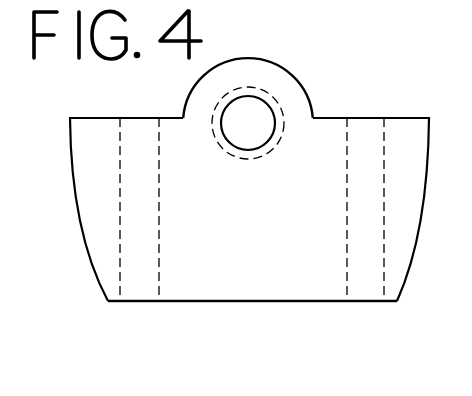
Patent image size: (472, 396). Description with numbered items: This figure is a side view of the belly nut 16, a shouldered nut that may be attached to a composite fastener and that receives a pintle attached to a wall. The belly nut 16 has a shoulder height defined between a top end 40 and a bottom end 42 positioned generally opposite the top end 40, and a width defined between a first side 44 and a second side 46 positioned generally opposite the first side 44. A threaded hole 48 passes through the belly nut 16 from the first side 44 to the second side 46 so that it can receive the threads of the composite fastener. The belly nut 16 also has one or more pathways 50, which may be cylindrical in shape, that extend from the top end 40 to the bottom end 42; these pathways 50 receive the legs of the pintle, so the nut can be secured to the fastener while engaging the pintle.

The belly nut 16 is at (171, 117).
The top end 40 is at (329, 117).
The bottom end 42 is at (313, 301).
The first side 44 is at (177, 278).
The second side 46 is at (233, 270).
The threaded hole 48 is at (260, 97).
The pathways 50 is at (133, 130).